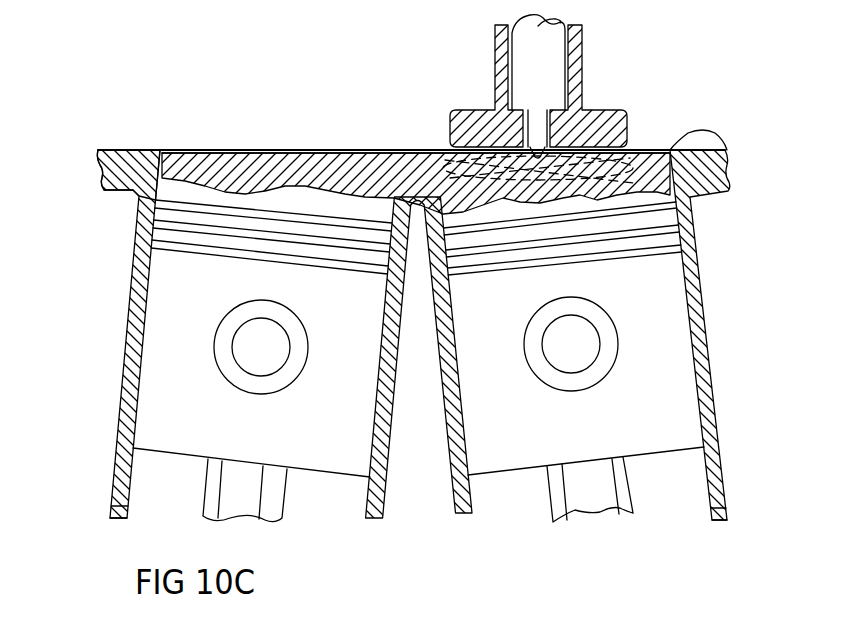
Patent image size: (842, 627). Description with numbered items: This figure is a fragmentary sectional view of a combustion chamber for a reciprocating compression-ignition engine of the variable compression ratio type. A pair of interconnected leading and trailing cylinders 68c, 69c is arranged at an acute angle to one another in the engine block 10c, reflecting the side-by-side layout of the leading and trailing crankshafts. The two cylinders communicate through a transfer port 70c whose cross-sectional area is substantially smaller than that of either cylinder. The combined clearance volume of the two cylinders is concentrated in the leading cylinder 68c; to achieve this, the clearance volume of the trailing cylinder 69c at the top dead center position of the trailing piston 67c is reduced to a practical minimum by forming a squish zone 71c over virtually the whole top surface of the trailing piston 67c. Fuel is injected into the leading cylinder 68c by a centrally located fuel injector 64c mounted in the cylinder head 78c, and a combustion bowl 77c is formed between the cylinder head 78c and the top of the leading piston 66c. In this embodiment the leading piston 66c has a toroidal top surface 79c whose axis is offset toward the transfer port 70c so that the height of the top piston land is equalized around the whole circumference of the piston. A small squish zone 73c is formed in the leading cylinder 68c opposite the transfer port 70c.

The engine block 10c is at (123, 172).
The fuel injector 64c is at (547, 73).
The leading piston 66c is at (727, 325).
The trailing piston 67c is at (107, 334).
The leading cylinder 68c is at (678, 497).
The trailing cylinder 69c is at (147, 490).
The transfer port 70c is at (413, 162).
The squish zone 71c is at (228, 150).
The small squish zone 73c is at (706, 131).
The combustion bowl 77c is at (585, 196).
The cylinder head 78c is at (462, 132).
The toroidal top surface 79c is at (643, 168).